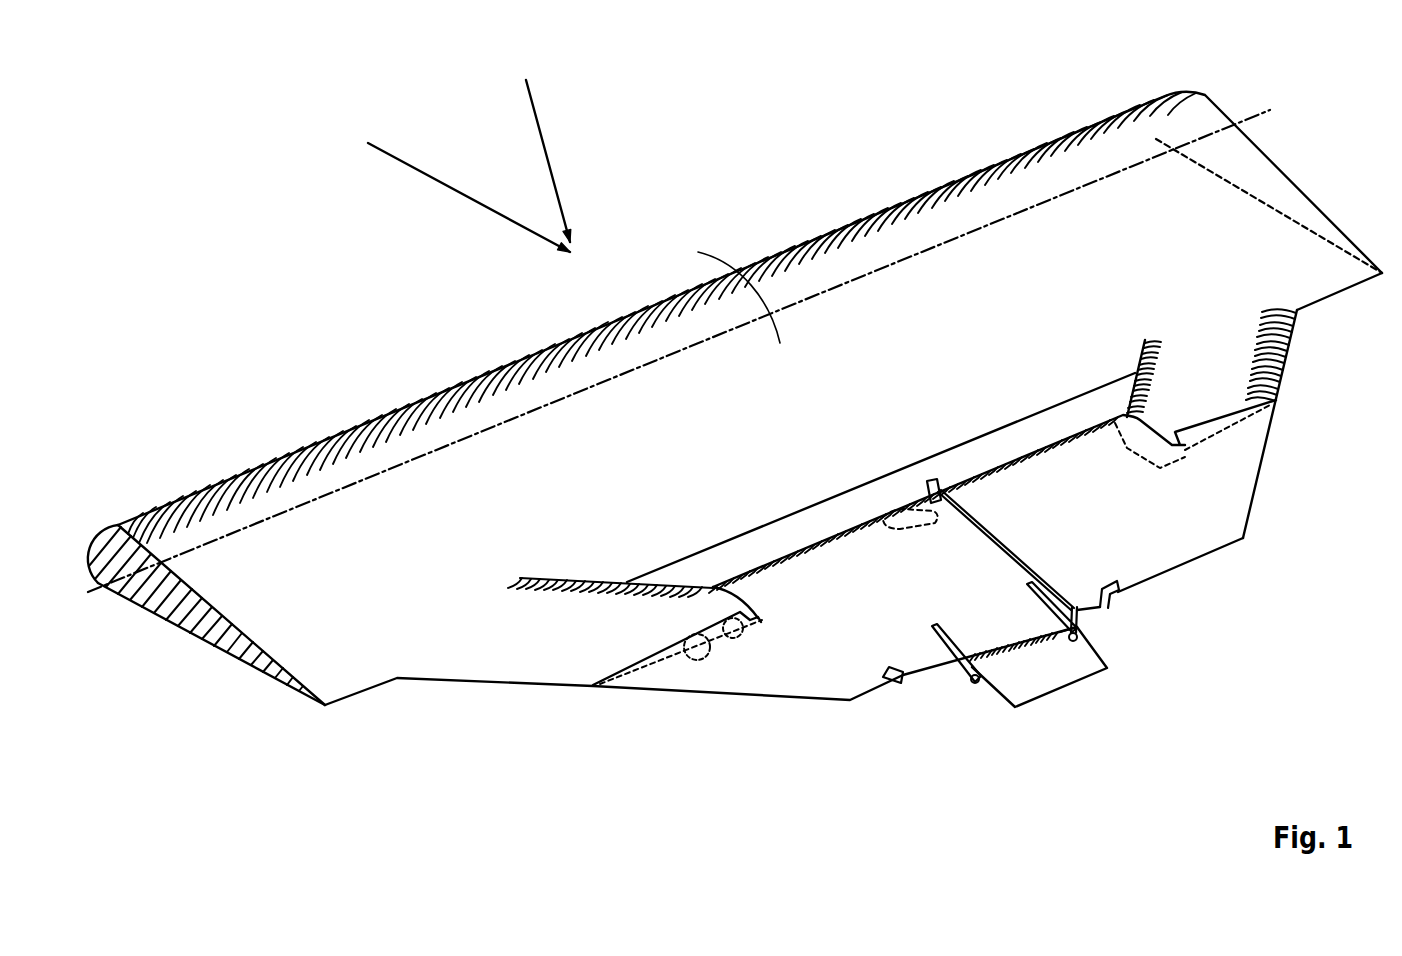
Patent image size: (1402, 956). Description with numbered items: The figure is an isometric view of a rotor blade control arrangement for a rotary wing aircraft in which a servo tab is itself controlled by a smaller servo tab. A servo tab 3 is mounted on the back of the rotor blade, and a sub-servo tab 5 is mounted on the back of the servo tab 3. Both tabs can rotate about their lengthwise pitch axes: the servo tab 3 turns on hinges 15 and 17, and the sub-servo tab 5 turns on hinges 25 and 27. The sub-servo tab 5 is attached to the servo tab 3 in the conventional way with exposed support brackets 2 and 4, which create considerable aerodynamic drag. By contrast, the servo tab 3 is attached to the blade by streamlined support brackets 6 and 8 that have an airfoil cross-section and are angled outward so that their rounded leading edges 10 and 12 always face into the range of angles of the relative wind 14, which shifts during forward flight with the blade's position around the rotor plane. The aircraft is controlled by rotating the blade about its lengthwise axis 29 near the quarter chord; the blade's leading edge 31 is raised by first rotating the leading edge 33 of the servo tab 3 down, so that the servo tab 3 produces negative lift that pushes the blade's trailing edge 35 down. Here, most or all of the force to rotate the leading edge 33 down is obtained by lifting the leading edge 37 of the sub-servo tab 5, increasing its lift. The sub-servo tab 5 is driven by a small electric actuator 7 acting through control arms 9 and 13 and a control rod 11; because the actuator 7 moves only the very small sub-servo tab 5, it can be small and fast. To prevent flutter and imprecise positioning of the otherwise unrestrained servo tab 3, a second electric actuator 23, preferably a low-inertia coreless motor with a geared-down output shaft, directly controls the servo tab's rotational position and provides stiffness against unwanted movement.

The support bracket 2 is at (960, 665).
The servo tab 3 is at (1167, 537).
The support bracket 4 is at (1060, 632).
The sub-servo tab 5 is at (1030, 682).
The support bracket 6 is at (567, 673).
The electric actuator 7 is at (903, 532).
The support bracket 8 is at (1282, 382).
The control arm 9 is at (925, 490).
The rounded leading edge 10 is at (586, 588).
The control rod 11 is at (1003, 546).
The rounded leading edge 12 is at (1137, 358).
The control arm 13 is at (1080, 627).
The relative wind 14 is at (537, 128).
The hinge 15 is at (736, 640).
The hinge 17 is at (1158, 455).
The electric actuator 23 is at (727, 640).
The hinge 25 is at (963, 688).
The hinge 27 is at (1087, 640).
The lengthwise axis 29 is at (945, 240).
The leading edge 31 is at (368, 417).
The leading edge 33 is at (752, 570).
The trailing edge 35 is at (667, 565).
The leading edge 37 is at (1023, 643).